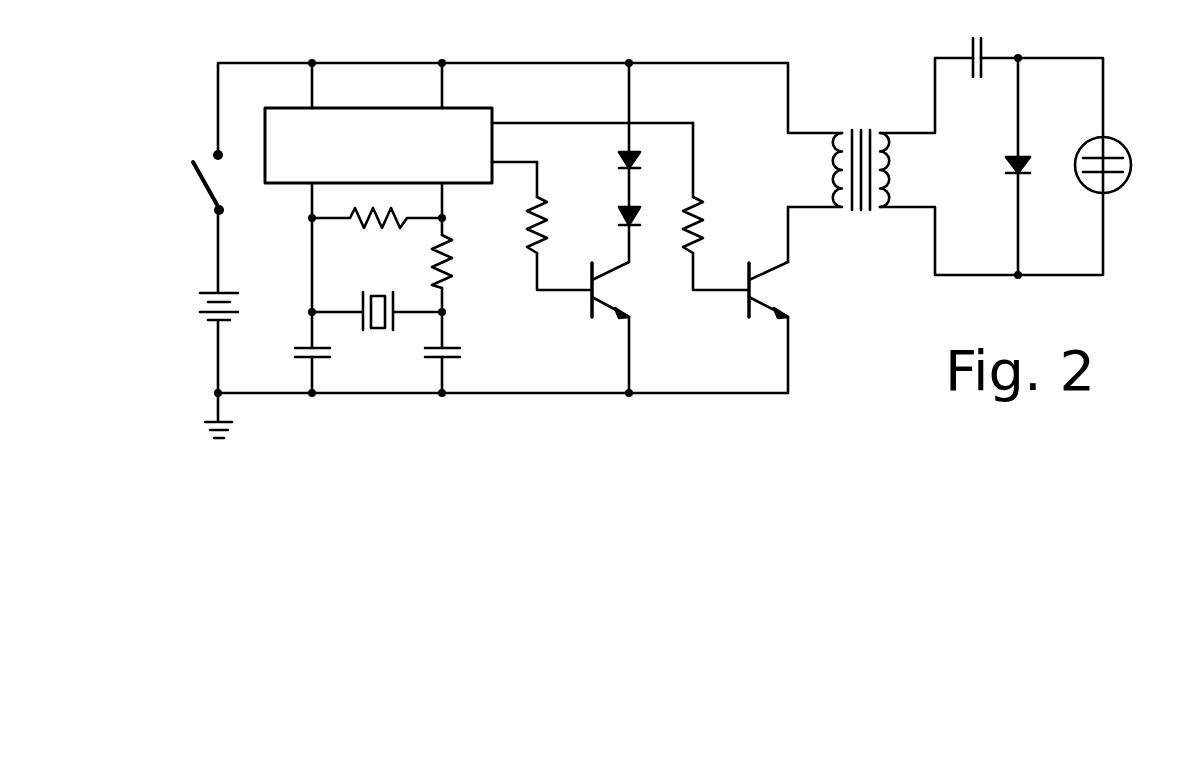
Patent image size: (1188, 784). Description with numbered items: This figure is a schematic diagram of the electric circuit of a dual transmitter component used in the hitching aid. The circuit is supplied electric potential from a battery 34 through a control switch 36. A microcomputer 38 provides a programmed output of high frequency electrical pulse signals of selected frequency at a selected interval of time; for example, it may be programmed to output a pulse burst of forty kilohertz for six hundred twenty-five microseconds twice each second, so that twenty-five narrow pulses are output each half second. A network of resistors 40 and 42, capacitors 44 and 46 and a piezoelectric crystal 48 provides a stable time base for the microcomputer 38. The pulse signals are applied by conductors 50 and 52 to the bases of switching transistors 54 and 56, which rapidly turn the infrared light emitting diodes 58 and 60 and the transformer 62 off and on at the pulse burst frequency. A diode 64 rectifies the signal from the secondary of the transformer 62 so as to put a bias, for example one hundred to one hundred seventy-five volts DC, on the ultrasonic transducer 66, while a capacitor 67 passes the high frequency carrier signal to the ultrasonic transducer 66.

The battery 34 is at (212, 312).
The control switch 36 is at (203, 188).
The microcomputer 38 is at (265, 140).
The resistor 40 is at (392, 228).
The resistor 42 is at (495, 270).
The capacitor 44 is at (305, 357).
The capacitor 46 is at (450, 360).
The piezoelectric crystal 48 is at (372, 333).
The conductor 50 is at (500, 123).
The conductor 52 is at (520, 165).
The switching transistor 54 is at (600, 305).
The switching transistor 56 is at (752, 305).
The infrared light emitting diode 58 is at (618, 158).
The infrared light emitting diode 60 is at (622, 210).
The transformer 62 is at (862, 128).
The diode 64 is at (1010, 162).
The ultrasonic transducer 66 is at (1133, 165).
The capacitor 67 is at (985, 48).